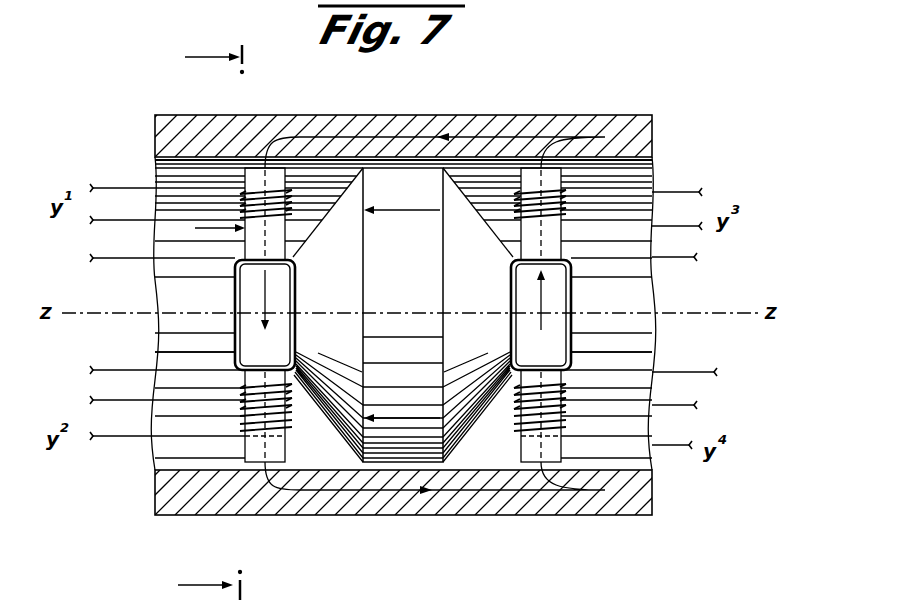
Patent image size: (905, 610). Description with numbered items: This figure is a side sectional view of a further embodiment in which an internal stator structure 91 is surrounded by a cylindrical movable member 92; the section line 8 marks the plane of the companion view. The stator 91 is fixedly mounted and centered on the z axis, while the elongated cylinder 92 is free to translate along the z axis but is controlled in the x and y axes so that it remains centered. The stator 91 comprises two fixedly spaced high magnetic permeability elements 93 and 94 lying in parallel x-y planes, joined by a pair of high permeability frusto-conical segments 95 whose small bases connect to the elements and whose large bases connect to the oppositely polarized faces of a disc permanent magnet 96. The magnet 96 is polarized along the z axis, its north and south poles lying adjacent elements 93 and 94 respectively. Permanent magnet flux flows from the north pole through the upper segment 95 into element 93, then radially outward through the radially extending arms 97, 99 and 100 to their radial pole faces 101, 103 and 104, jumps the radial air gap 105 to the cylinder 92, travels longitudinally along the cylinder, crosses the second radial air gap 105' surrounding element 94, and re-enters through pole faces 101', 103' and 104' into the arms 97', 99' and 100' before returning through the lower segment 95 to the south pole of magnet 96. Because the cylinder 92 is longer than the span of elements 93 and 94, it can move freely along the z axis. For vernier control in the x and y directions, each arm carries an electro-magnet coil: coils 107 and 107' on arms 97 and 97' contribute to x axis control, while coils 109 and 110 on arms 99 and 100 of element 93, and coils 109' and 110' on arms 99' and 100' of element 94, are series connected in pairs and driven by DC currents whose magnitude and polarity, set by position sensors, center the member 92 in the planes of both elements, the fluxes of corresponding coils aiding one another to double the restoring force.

The section line 8- 8 is at (219, 323).
The internal stator structure 91 is at (240, 233).
The cylindrical movable member 92 is at (331, 518).
The high magnetic permeability element 93 is at (241, 449).
The high magnetic permeability element 94 is at (559, 451).
The frusto-conical segment 95 is at (348, 178).
The disc permanent magnet 96 is at (413, 448).
The radially extending arm 97 is at (176, 291).
The radially extending arm 97' is at (630, 257).
The radially extending arm 99 is at (245, 145).
The radially extending arm 99' is at (565, 136).
The radially extending arm 100 is at (203, 397).
The radially extending arm 100' is at (614, 379).
The radial pole face 101 is at (204, 315).
The radial pole face 101' is at (604, 315).
The radial pole face 103 is at (278, 166).
The radial pole face 103' is at (598, 170).
The radial pole face 104 is at (222, 468).
The radial pole face 104' is at (562, 478).
The radial air gap 105 is at (290, 117).
The radial air gap 105' is at (545, 110).
The coil 107 is at (176, 353).
The coil 107' is at (637, 324).
The coil 109 is at (199, 204).
The coil 109' is at (625, 187).
The coil 110 is at (194, 452).
The coil 110' is at (576, 426).